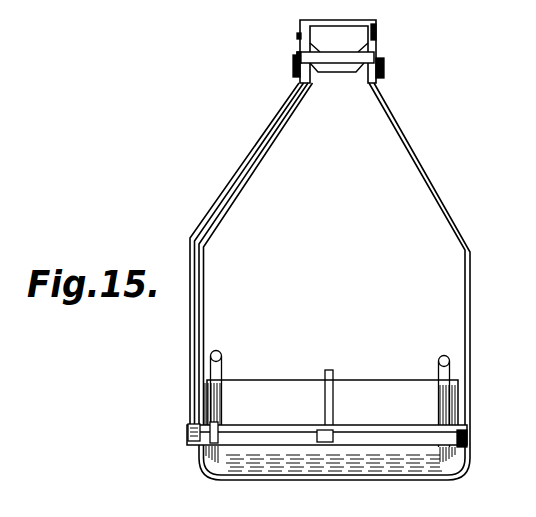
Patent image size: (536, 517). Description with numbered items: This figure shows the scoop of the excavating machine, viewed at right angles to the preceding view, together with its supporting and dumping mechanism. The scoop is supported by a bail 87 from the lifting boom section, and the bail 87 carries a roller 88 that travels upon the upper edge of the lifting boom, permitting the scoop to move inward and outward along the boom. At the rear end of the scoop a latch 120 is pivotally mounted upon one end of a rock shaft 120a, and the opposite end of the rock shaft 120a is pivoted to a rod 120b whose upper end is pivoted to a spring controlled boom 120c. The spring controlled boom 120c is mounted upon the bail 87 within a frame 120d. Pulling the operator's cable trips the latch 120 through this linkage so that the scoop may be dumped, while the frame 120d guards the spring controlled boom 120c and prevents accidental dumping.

The bail 87 is at (430, 178).
The roller 88 is at (349, 72).
The latch 120 is at (335, 383).
The rock shaft 120a is at (240, 432).
The rod 120b is at (241, 162).
The spring controlled boom 120c is at (368, 60).
The frame 120d is at (376, 36).